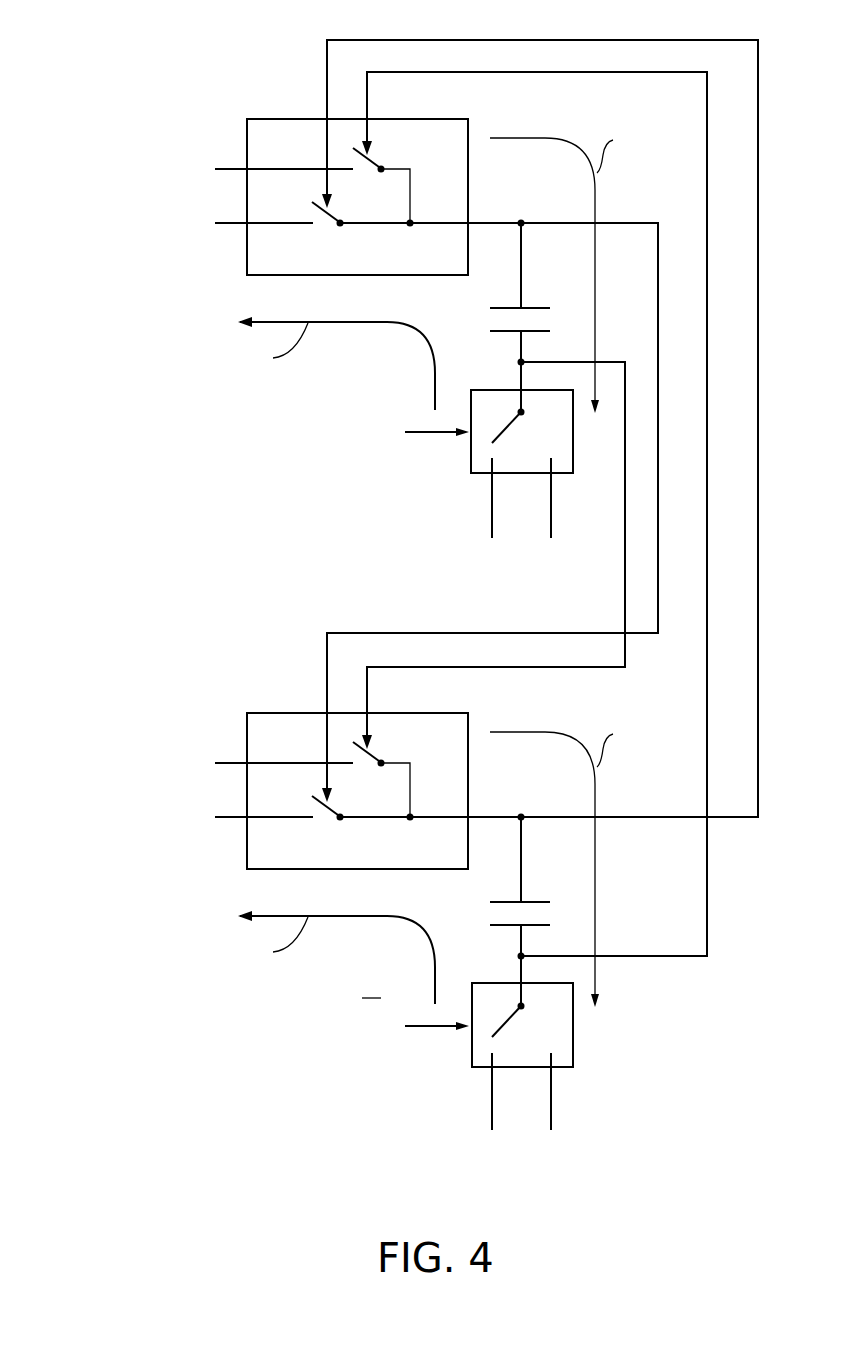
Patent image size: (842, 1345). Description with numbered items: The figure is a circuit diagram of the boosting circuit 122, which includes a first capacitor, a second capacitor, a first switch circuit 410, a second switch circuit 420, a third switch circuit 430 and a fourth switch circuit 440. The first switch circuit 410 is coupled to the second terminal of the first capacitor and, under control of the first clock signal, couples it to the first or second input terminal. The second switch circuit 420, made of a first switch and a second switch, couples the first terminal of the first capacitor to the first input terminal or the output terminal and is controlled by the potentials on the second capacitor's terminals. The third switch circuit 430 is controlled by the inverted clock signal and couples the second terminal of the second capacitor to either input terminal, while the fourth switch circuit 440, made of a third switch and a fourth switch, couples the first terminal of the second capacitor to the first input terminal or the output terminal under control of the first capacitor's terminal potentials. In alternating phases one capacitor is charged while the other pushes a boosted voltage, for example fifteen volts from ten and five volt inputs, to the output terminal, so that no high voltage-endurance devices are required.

The boosting circuit 122 is at (128, 53).
The first switch circuit 410 is at (470, 460).
The second switch circuit 420 is at (256, 118).
The third switch circuit 430 is at (573, 1035).
The fourth switch circuit 440 is at (256, 712).